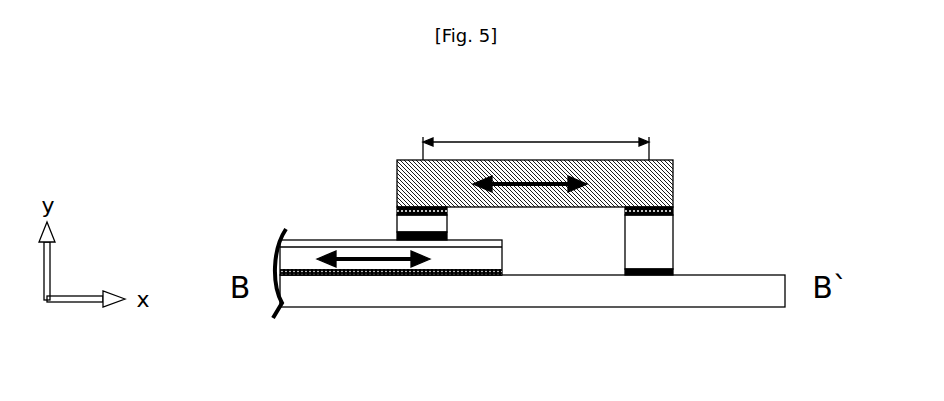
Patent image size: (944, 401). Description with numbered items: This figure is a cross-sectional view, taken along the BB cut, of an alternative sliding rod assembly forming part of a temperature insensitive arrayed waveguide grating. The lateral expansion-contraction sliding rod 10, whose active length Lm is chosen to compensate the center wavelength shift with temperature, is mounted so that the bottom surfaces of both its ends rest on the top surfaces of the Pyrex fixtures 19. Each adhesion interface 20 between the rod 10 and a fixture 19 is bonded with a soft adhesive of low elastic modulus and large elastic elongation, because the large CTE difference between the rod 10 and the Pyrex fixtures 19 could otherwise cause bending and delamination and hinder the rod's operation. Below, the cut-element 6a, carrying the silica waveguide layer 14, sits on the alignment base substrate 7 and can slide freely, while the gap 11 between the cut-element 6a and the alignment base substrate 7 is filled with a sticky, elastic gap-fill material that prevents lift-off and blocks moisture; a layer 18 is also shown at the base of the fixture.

The lateral expansion-contraction sliding rod 10 is at (590, 167).
The adhesion interface 20 is at (677, 212).
The Pyrex fixture 19 is at (662, 247).
The lower electrode layer 18 is at (673, 272).
The waveguide layer 14 is at (325, 243).
The gap 11 is at (403, 273).
The cut-element 6a is at (460, 261).
The alignment base substrate 7 is at (597, 290).